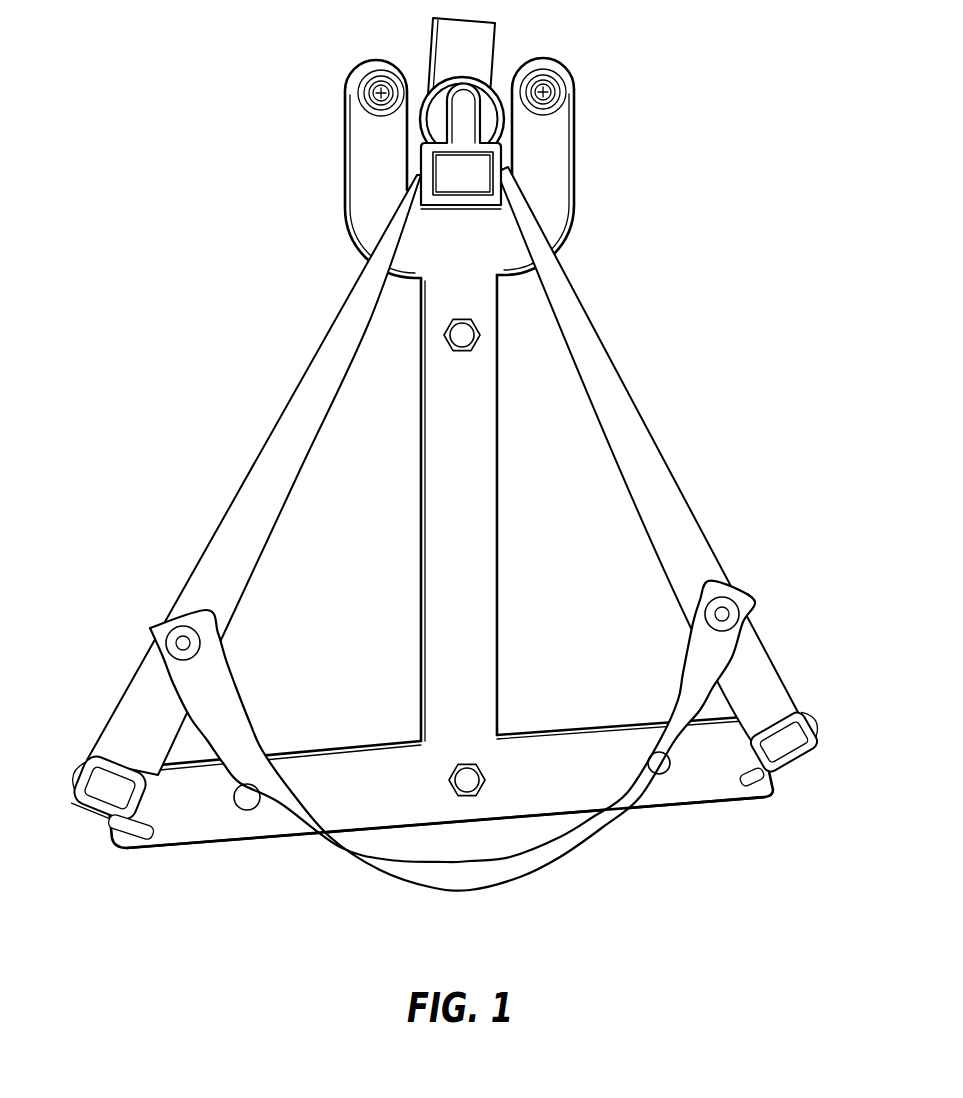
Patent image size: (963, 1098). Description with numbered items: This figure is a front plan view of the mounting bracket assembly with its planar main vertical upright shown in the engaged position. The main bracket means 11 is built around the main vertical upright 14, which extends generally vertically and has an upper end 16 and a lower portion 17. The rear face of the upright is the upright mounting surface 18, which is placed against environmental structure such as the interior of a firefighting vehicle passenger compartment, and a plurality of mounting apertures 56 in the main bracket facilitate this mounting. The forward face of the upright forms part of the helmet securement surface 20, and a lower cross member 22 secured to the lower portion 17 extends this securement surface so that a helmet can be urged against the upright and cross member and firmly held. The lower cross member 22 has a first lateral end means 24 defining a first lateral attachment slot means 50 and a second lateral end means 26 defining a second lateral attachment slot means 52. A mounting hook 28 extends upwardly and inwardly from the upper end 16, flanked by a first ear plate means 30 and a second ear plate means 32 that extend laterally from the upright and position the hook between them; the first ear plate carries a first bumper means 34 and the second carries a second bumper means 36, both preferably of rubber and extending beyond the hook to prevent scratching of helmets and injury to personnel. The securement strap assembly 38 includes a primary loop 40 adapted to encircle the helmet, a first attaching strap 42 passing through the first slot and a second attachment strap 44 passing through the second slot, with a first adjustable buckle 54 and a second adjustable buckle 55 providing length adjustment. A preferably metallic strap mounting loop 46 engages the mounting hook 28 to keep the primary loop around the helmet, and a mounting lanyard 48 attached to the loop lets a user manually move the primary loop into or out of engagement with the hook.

The main bracket means 11 is at (445, 461).
The main vertical upright 14 is at (439, 478).
The upper end 16 is at (472, 268).
The lower portion 17 is at (468, 740).
The upright mounting surface 18 is at (418, 378).
The helmet securement surface 20 is at (460, 504).
The lower cross member 22 is at (439, 810).
The first lateral end means 24 is at (162, 853).
The second lateral end means 26 is at (727, 792).
The mounting hook 28 is at (452, 118).
The first ear plate means 30 is at (357, 143).
The second ear plate means 32 is at (570, 143).
The first bumper means 34 is at (357, 81).
The second bumper means 36 is at (567, 81).
The securement strap assembly 38 is at (452, 745).
The primary loop 40 is at (458, 862).
The first attaching strap 42 is at (133, 697).
The second attachment strap 44 is at (748, 652).
The strap mounting loop 46 is at (498, 85).
The mounting lanyard 48 is at (446, 56).
The first lateral attachment slot means 50 is at (135, 835).
The second lateral attachment slot means 52 is at (760, 790).
The first adjustable buckle 54 is at (91, 755).
The second adjustable buckle 55 is at (790, 712).
The mounting apertures 56 is at (470, 340).